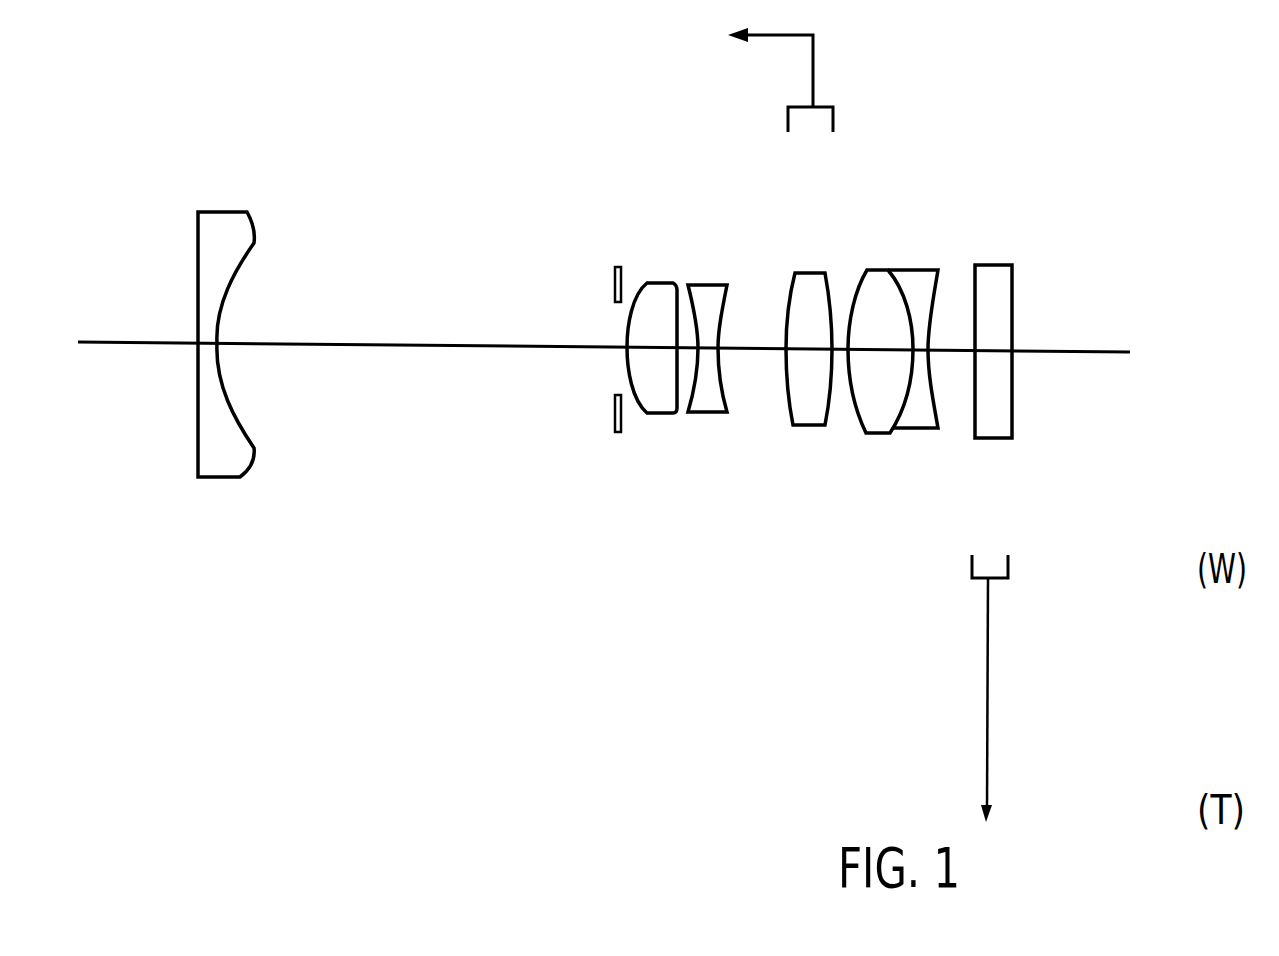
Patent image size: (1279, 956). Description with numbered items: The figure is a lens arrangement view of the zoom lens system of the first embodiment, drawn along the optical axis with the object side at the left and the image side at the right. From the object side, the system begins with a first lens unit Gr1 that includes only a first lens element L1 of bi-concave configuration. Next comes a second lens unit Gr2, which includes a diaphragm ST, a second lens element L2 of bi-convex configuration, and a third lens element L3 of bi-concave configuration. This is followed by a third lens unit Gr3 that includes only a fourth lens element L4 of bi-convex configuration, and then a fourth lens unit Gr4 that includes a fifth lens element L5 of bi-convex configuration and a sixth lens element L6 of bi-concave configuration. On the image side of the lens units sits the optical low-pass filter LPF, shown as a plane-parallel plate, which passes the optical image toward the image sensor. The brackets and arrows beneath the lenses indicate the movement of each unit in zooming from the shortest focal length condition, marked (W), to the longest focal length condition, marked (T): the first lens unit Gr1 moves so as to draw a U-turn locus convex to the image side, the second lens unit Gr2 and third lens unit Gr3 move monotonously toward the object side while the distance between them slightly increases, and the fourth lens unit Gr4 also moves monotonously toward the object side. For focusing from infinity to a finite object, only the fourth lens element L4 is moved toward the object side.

The first lens element L1 is at (210, 218).
The second lens element L2 is at (655, 305).
The third lens element L3 is at (710, 293).
The fourth lens element L4 is at (805, 290).
The fifth lens element L5 is at (876, 290).
The sixth lens element L6 is at (920, 283).
The diaphragm ST is at (614, 285).
The optical low-pass filter LPF is at (997, 280).
The first lens unit Gr1 is at (193, 476).
The second lens unit Gr2 is at (598, 455).
The third lens unit Gr3 is at (771, 487).
The fourth lens unit Gr4 is at (907, 471).